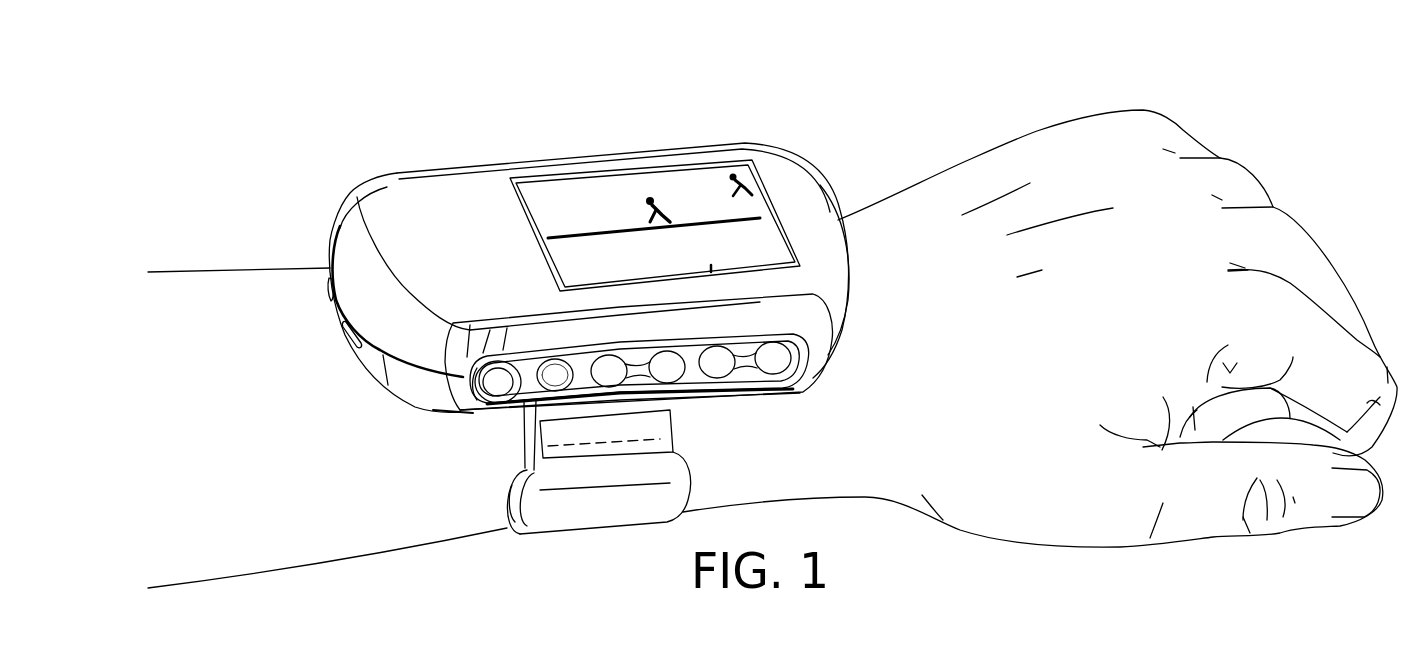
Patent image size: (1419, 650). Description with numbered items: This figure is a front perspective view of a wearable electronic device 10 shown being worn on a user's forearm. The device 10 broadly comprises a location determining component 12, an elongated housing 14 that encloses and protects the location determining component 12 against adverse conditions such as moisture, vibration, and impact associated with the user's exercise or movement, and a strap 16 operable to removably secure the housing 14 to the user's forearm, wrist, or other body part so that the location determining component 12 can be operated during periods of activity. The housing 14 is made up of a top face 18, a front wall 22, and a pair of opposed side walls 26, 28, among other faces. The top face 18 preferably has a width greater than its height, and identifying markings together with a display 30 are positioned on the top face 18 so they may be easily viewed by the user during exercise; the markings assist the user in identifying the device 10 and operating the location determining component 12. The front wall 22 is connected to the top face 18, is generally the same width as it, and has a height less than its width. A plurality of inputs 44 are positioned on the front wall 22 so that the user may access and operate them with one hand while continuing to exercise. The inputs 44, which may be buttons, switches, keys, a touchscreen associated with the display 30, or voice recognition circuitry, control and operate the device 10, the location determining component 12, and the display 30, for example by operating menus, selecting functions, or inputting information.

The device 10 is at (350, 112).
The location determining component 12 is at (312, 168).
The elongated housing 14 is at (300, 325).
The strap 16 is at (650, 462).
The top face 18 is at (434, 188).
The front wall 22 is at (470, 378).
The side wall 26 is at (336, 253).
The side wall 28 is at (838, 205).
The display 30 is at (723, 189).
The inputs 44 is at (520, 400).